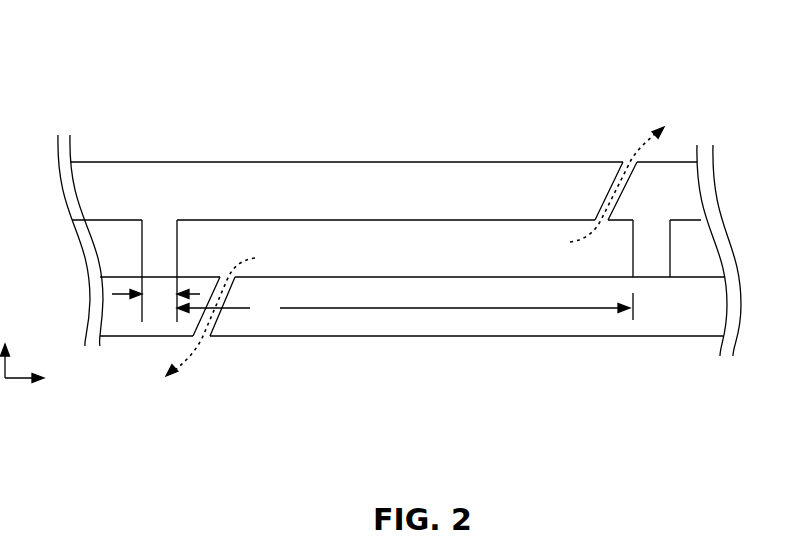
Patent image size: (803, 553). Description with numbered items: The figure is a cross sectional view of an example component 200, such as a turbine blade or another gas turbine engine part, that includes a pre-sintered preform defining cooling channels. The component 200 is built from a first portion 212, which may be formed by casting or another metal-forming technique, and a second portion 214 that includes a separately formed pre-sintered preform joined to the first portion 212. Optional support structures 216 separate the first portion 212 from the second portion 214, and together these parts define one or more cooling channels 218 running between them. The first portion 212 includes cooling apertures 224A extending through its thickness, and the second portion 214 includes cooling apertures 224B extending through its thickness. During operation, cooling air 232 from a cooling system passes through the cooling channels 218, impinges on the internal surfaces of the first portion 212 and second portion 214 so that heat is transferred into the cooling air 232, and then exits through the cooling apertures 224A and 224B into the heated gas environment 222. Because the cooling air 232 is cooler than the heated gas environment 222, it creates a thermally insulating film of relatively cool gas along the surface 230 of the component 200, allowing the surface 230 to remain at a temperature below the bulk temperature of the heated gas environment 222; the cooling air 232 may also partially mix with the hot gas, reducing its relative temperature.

The component 200 is at (127, 132).
The first portion 212 is at (573, 336).
The second portion 214 is at (357, 162).
The support structures 216 is at (167, 240).
The cooling channels 218 is at (412, 257).
The heated gas environment 222 is at (421, 364).
The cooling apertures 224A is at (211, 343).
The cooling apertures 224B is at (621, 155).
The surface 230 is at (472, 162).
The cooling air 232 is at (656, 118).